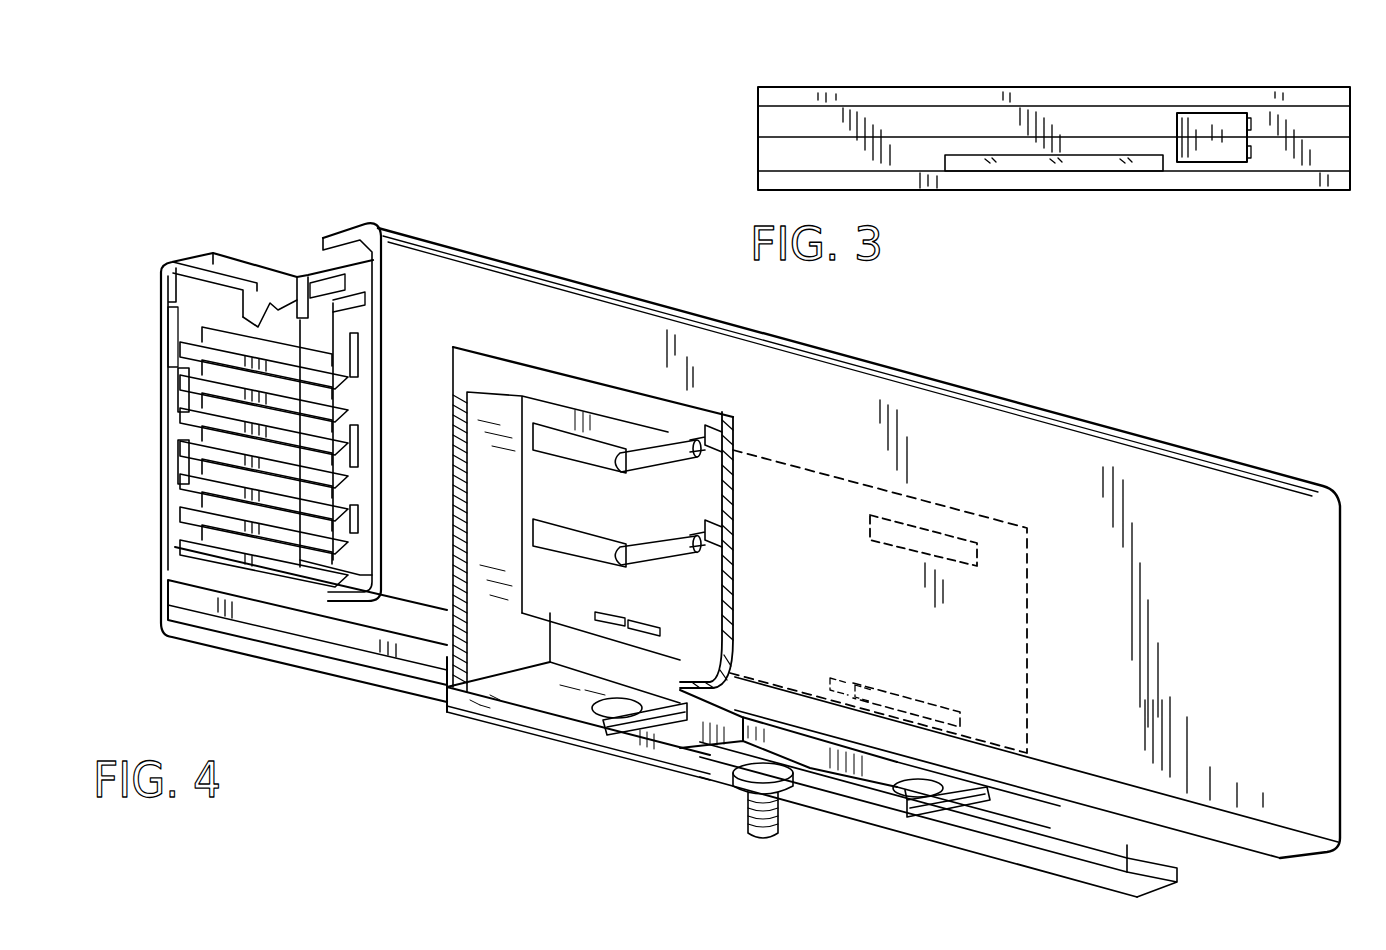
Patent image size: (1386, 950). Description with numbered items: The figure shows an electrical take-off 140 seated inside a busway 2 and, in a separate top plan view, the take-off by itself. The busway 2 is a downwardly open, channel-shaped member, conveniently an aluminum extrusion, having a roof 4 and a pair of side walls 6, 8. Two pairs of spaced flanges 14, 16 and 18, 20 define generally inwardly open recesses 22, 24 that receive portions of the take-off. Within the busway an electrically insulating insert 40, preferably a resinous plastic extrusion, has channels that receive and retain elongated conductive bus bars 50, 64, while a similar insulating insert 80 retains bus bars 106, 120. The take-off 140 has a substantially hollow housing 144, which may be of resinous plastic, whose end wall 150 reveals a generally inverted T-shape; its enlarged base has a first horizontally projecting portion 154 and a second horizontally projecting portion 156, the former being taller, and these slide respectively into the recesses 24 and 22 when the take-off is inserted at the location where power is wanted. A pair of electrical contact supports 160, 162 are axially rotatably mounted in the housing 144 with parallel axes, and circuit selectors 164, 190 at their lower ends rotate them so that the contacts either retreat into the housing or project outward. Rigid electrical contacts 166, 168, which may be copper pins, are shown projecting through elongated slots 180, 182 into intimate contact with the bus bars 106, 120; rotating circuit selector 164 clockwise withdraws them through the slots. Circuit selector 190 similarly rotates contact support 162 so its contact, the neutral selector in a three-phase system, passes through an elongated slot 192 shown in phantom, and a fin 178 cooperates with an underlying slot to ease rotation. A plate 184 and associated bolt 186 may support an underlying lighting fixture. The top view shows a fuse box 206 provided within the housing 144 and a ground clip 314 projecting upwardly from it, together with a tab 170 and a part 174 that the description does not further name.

In FIG. 4, the busway 2 is at (858, 352).
In FIG. 4, the roof 4 is at (310, 273).
In FIG. 4, the side wall 6 is at (168, 393).
In FIG. 4, the side wall 8 is at (373, 268).
In FIG. 4, the flange 14 is at (215, 640).
In FIG. 4, the flange 16 is at (203, 605).
In FIG. 4, the flange 18 is at (372, 608).
In FIG. 4, the flange 20 is at (310, 558).
In FIG. 4, the recess 22 is at (168, 622).
In FIG. 4, the recess 24 is at (300, 585).
In FIG. 4, the insert 40 is at (172, 365).
In FIG. 4, the bus bar 50 is at (187, 398).
In FIG. 4, the bus bar 64 is at (178, 482).
In FIG. 4, the insert 80 is at (376, 328).
In FIG. 4, the bus bar 106 is at (362, 357).
In FIG. 4, the bus bar 120 is at (333, 440).
In FIG. 3, the take-off 140 is at (1266, 194).
In FIG. 4, the take-off 140 is at (535, 392).
In FIG. 4, the housing 144 is at (578, 492).
In FIG. 4, the end wall 150 is at (507, 532).
In FIG. 3, the first horizontally projecting portion 154 is at (1013, 188).
In FIG. 4, the first horizontally projecting portion 154 is at (533, 647).
In FIG. 3, the second horizontally projecting portion 156 is at (975, 90).
In FIG. 4, the second horizontally projecting portion 156 is at (447, 680).
In FIG. 4, the electrical contact support 160 is at (596, 723).
In FIG. 4, the electrical contact support 162 is at (893, 810).
In FIG. 4, the circuit selector 164 is at (633, 718).
In FIG. 4, the electrical contact 166 is at (670, 440).
In FIG. 4, the electrical contact 168 is at (670, 533).
In FIG. 4, the tab 170 is at (600, 617).
In FIG. 4, the hidden bracket 174 is at (917, 697).
In FIG. 4, the fin 178 is at (613, 618).
In FIG. 4, the elongated slot 180 is at (563, 432).
In FIG. 4, the elongated slot 182 is at (582, 537).
In FIG. 4, the plate 184 is at (695, 773).
In FIG. 4, the bolt 186 is at (747, 837).
In FIG. 4, the circuit selector 190 is at (933, 790).
In FIG. 4, the elongated slot 192 is at (937, 533).
In FIG. 3, the fuse box 206 is at (1110, 163).
In FIG. 3, the ground clip 314 is at (1228, 118).